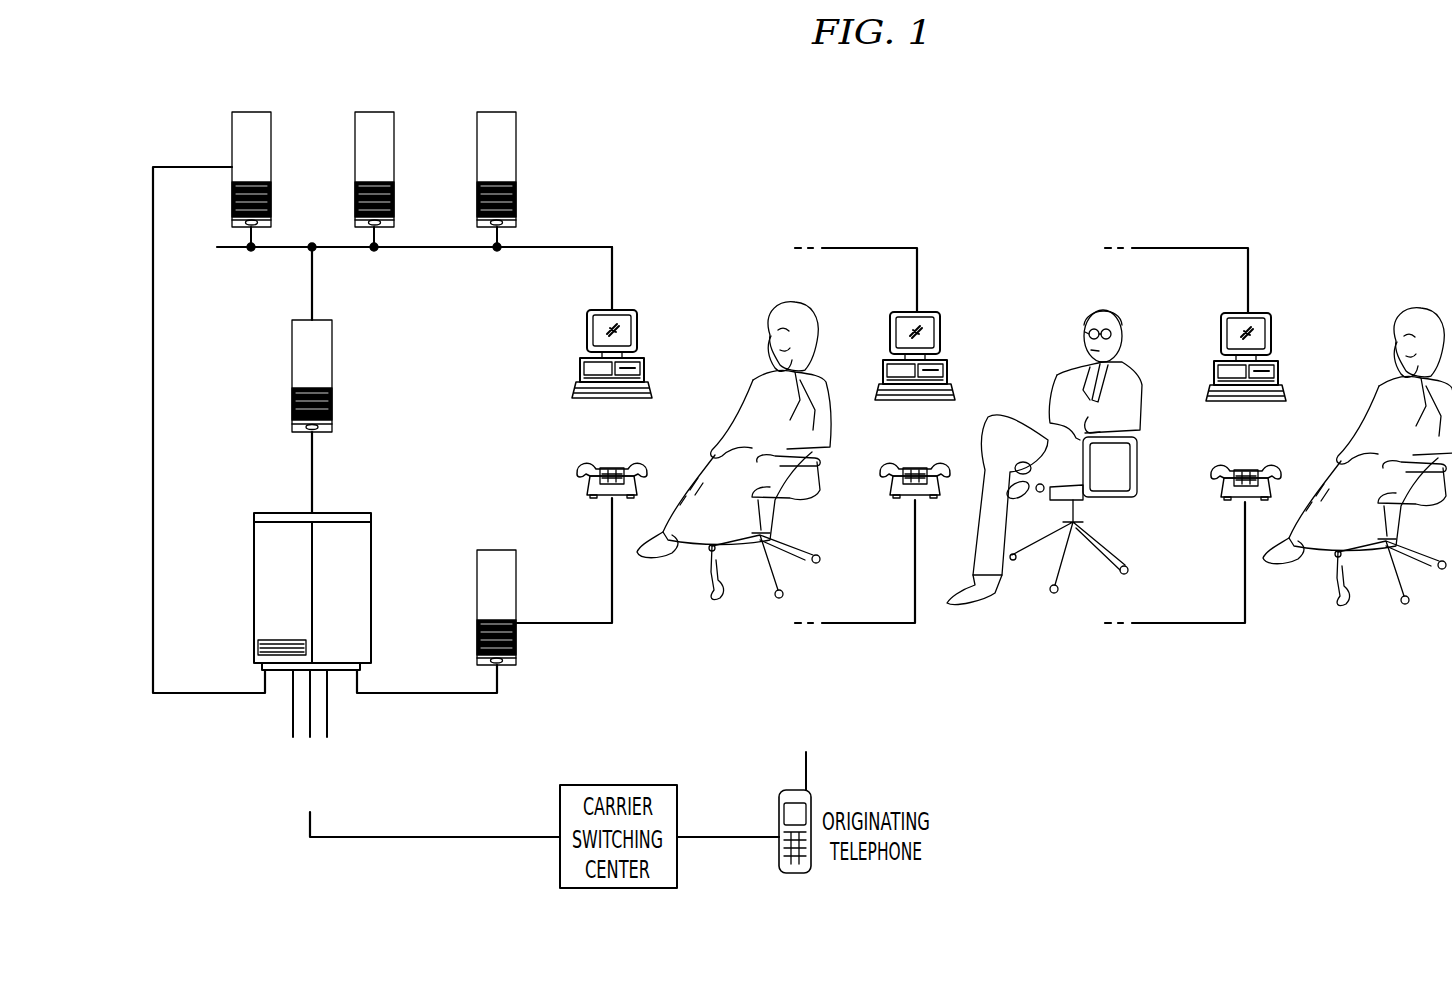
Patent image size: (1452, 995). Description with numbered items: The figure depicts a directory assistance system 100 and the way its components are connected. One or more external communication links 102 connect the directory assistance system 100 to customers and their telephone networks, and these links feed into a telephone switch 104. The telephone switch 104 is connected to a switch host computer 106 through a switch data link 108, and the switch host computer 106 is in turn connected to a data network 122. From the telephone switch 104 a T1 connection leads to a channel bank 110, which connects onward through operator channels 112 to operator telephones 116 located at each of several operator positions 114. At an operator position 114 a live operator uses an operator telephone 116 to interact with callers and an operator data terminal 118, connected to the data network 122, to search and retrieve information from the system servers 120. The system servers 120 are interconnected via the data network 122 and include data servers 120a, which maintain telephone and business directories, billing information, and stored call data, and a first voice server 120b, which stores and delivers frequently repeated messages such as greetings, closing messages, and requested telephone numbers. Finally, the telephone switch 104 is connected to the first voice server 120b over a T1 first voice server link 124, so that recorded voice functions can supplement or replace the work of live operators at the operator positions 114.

The directory assistance system 100 is at (882, 76).
The external communication links 102 is at (343, 721).
The telephone switch 104 is at (254, 575).
The switch host computer 106 is at (292, 400).
The switch data link 108 is at (312, 481).
The channel bank 110 is at (477, 581).
The operator channel 112 is at (590, 625).
The operator position 114 is at (697, 262).
The operator telephone 116 is at (1255, 442).
The operator data terminal 118 is at (1283, 287).
The system servers 120 is at (523, 58).
The data servers 120a is at (525, 106).
The first voice server 120b is at (232, 138).
The data network 122 is at (588, 246).
The first voice server link 124 is at (153, 695).